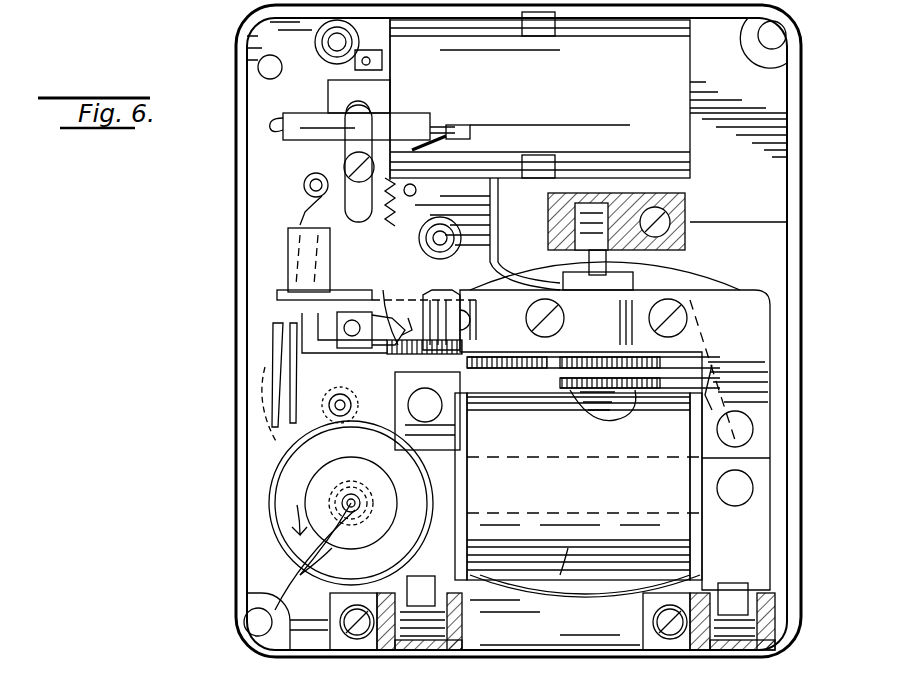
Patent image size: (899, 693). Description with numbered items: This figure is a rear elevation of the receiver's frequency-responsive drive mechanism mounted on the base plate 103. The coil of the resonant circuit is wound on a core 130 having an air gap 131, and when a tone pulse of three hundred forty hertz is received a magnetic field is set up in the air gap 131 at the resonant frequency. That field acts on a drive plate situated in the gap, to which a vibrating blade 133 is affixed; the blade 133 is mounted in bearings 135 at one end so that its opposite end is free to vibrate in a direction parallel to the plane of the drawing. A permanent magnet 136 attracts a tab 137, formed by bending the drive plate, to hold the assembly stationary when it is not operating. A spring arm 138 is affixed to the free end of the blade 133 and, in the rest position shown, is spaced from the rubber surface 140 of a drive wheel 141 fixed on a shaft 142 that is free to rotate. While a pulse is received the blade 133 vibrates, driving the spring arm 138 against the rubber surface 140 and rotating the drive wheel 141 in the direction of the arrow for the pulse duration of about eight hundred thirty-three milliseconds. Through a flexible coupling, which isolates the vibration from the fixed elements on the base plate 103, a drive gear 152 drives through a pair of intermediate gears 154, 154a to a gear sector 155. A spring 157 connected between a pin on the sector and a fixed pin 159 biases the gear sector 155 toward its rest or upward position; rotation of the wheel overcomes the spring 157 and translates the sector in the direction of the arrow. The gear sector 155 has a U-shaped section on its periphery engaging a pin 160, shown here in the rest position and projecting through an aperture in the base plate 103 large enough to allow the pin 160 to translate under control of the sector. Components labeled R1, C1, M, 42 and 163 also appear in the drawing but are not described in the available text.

The base plate 103 is at (255, 240).
The core 130 is at (760, 365).
The air gap 131 is at (565, 322).
The vibrating blade 133 is at (478, 392).
The bearings 135 is at (587, 380).
The permanent magnet 136 is at (478, 303).
The tab 137 is at (450, 283).
The spring arm 138 is at (322, 415).
The rubber surface 140 is at (270, 505).
The drive wheel 141 is at (290, 555).
The shaft 142 is at (315, 562).
The drive gear 152 is at (457, 470).
The intermediate gear 154 is at (300, 397).
The intermediate gear 154a is at (300, 405).
The gear sector 155 is at (327, 377).
The spring 157 is at (300, 203).
The fixed pin 159 is at (304, 183).
The pin 160 is at (380, 305).
The pawl 163 is at (398, 305).
The relay R1 is at (370, 122).
The capacitor C1 is at (588, 117).
The motor M is at (545, 590).
The motor housing 42 is at (566, 580).